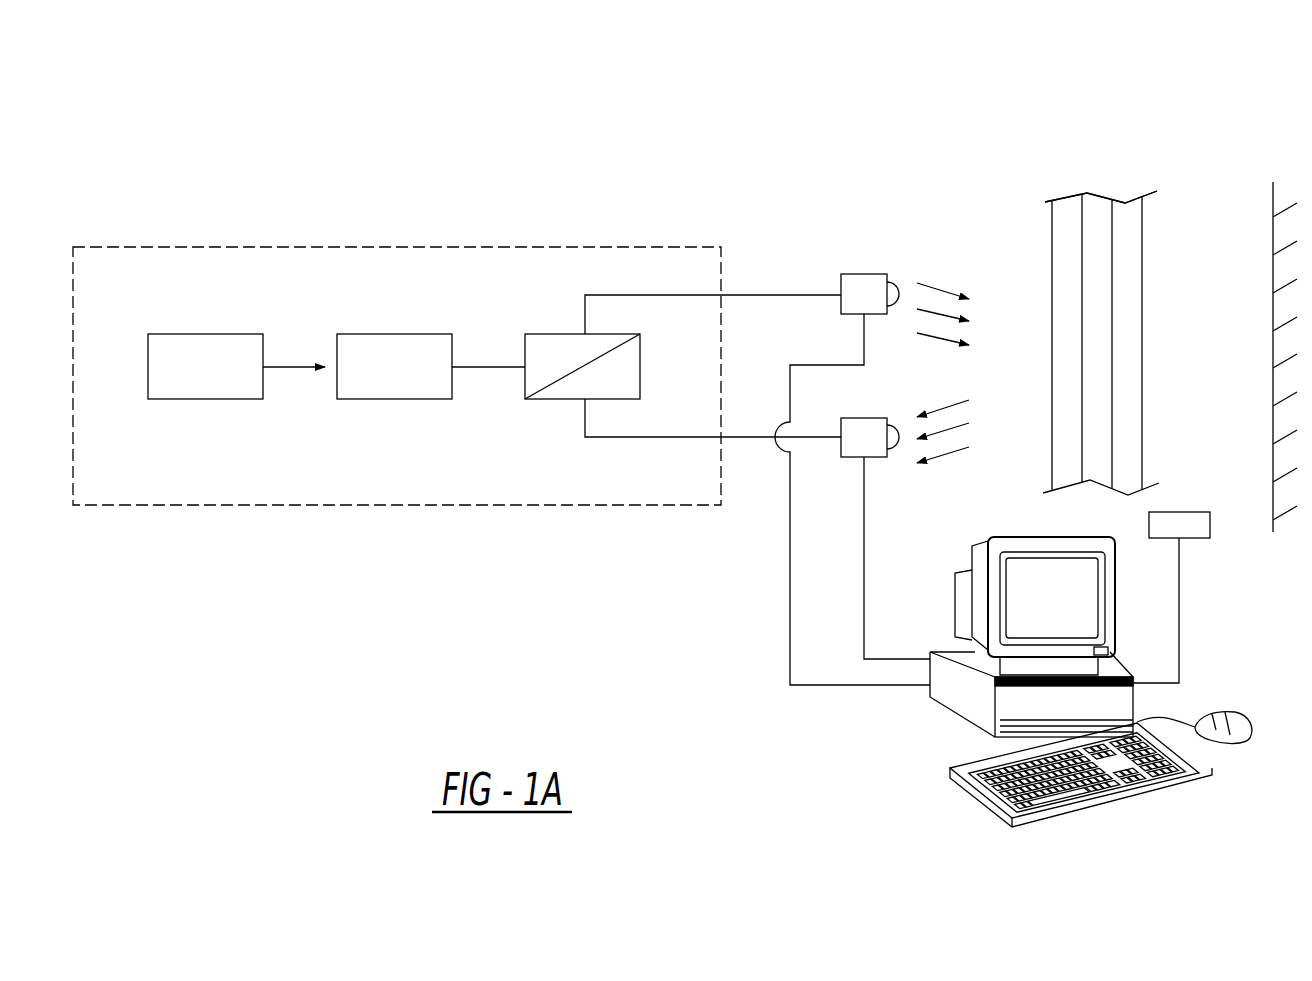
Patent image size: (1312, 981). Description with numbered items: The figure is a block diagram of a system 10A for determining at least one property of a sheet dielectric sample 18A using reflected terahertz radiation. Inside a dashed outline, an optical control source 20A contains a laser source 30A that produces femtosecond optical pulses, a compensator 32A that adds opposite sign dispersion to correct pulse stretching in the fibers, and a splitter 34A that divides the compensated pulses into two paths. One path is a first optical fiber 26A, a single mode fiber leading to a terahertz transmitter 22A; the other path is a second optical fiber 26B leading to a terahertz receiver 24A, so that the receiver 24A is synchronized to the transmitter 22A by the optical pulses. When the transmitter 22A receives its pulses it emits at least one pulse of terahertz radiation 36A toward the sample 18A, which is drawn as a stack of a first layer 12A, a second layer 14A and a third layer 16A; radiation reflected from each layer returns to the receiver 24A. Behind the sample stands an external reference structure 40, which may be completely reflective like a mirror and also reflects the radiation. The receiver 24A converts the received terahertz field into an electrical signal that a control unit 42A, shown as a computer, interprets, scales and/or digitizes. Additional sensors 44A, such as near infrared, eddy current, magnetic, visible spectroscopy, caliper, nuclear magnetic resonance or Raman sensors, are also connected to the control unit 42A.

The system 10A is at (1015, 93).
The first layer 12A is at (1114, 291).
The second layer 14A is at (1097, 296).
The third layer 16A is at (1127, 380).
The sheet dielectric sample 18A is at (1107, 192).
The optical control source 20A is at (288, 247).
The terahertz transmitter 22A is at (864, 274).
The terahertz receiver 24A is at (848, 457).
The first optical fiber 26A is at (776, 295).
The second optical fiber 26B is at (748, 437).
The laser source 30A is at (190, 399).
The compensator 32A is at (388, 334).
The splitter 34A is at (552, 334).
The pulse of terahertz radiation 36A is at (930, 283).
The external reference structure 40 is at (1273, 502).
The control unit 42A is at (972, 698).
The additional sensors 44A is at (1198, 538).